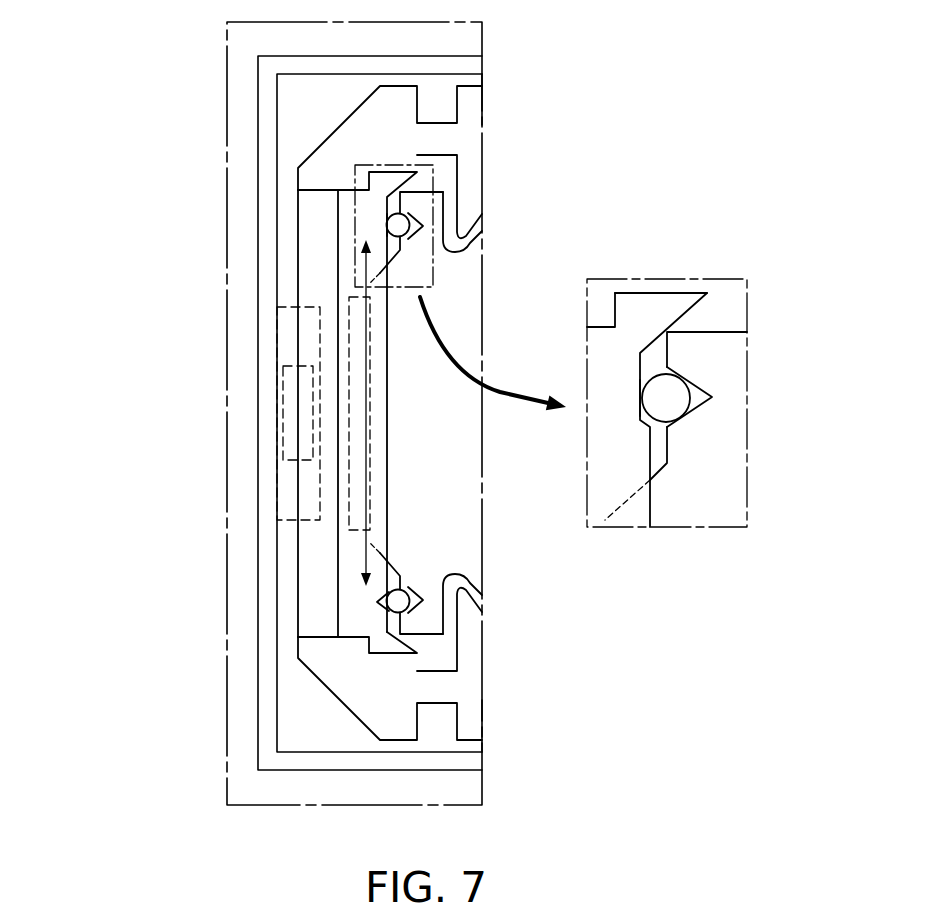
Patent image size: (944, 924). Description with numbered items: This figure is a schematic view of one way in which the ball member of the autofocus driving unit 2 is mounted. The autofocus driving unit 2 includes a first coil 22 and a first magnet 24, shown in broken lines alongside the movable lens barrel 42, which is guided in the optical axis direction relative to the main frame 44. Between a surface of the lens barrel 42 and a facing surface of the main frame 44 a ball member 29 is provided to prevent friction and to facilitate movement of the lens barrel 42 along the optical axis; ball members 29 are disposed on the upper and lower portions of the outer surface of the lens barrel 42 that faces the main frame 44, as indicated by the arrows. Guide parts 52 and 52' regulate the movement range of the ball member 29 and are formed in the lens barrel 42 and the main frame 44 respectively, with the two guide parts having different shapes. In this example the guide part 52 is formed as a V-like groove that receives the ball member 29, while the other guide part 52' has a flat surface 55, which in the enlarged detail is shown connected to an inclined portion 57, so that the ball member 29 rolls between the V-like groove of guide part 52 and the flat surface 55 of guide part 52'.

The autofocus driving unit 2 is at (126, 521).
The first coil 22 is at (287, 480).
The first magnet 24 is at (360, 492).
The ball member 29 is at (677, 403).
The lens barrel 42 is at (713, 367).
The main frame 44 is at (660, 307).
The guide part 52 is at (485, 412).
The guide part 52' is at (391, 394).
The flat surface 55 is at (387, 243).
The inclined portion 57 is at (647, 430).